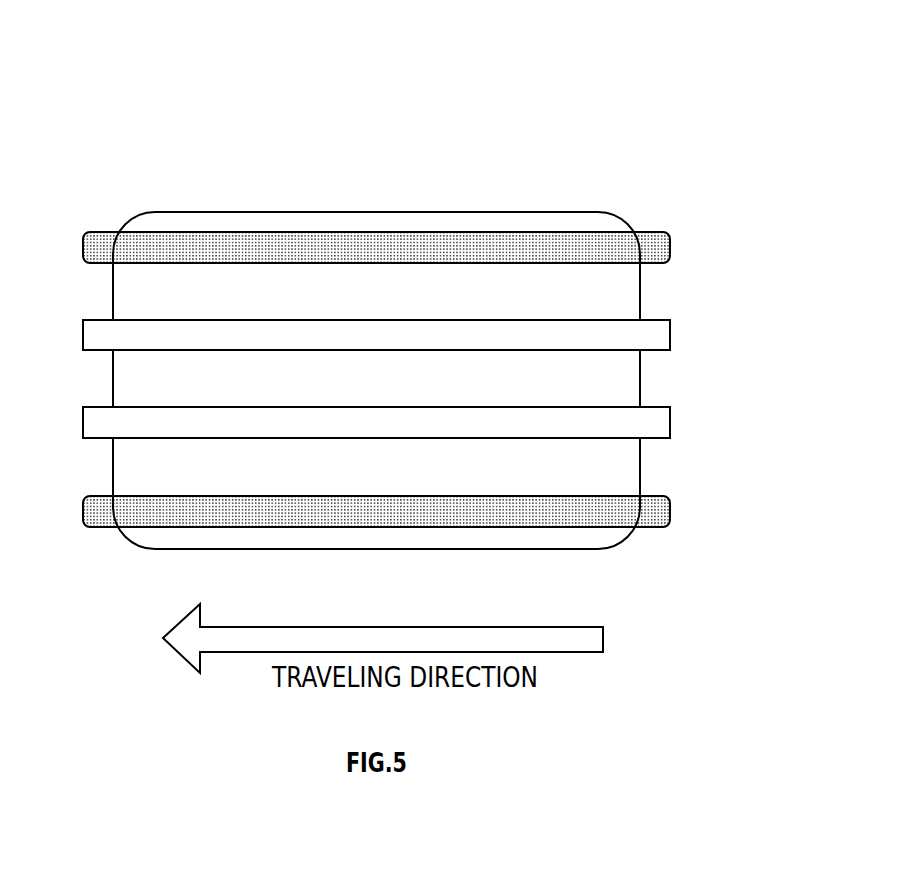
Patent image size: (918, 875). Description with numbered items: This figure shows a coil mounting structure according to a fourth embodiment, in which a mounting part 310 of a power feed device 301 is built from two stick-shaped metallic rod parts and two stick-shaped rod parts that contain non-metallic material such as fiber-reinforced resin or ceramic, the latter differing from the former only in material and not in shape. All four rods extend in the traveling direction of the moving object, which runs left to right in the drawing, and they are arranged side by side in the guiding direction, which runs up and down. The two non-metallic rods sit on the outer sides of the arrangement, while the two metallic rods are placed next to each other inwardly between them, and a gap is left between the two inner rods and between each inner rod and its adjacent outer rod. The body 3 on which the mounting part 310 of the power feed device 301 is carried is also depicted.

The battery cell / body 3 is at (377, 212).
The power feed device 301 is at (108, 104).
The mounting part 310 is at (662, 208).